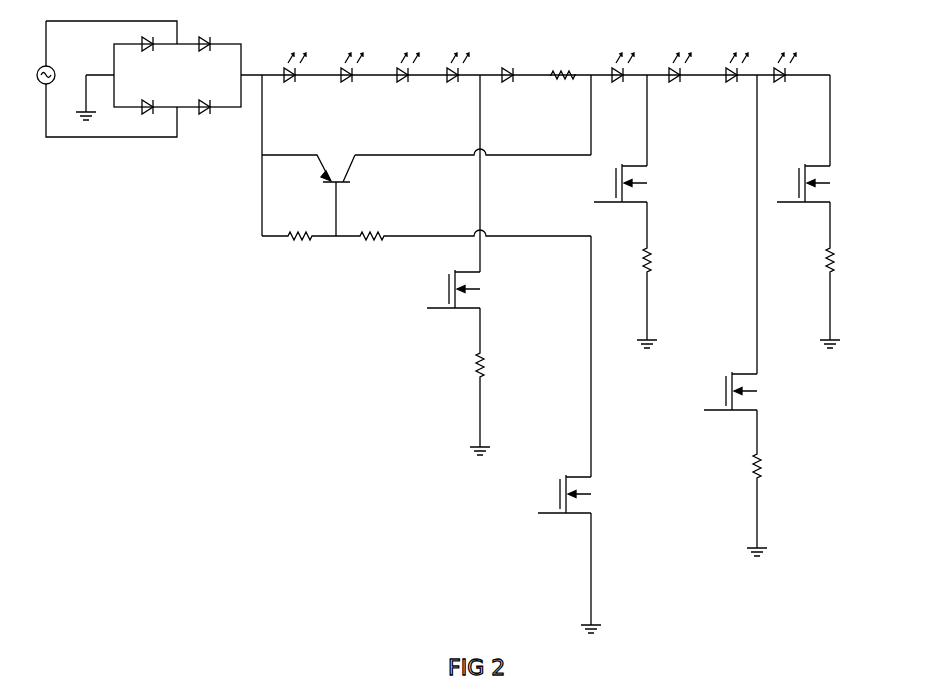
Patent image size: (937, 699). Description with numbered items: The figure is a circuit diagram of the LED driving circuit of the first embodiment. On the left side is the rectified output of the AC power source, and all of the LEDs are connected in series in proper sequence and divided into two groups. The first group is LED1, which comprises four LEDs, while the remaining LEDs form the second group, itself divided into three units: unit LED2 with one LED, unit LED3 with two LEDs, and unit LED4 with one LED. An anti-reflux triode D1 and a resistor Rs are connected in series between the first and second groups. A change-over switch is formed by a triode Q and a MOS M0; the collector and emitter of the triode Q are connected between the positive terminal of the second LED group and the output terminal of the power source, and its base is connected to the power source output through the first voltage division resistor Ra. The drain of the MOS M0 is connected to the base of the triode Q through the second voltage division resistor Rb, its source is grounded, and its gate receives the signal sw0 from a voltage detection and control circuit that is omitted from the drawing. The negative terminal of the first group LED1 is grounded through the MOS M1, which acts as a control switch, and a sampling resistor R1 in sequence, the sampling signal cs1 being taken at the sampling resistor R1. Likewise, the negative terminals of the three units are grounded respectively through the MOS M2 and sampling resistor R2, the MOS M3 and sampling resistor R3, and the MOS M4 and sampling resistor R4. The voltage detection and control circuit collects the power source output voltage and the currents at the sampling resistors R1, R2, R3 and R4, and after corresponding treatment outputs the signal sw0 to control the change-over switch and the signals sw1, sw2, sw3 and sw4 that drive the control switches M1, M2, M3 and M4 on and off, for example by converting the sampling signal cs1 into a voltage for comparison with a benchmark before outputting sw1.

The first group of LEDs LED1 is at (376, 47).
The LED unit of second group LED2 is at (623, 47).
The LED unit of second group LED3 is at (708, 47).
The LED unit of second group LED4 is at (795, 47).
The anti-reflux triode D1 is at (517, 64).
The resistor Rs is at (563, 61).
The triode Q is at (308, 179).
The first voltage division resistor Ra is at (300, 248).
The second voltage division resistor Rb is at (373, 248).
The MOS M1 is at (476, 289).
The signal sw1 is at (424, 289).
The sampling signal cs1 is at (504, 377).
The sampling resistor R1 is at (500, 366).
The MOS M0 is at (587, 494).
The signal sw0 is at (534, 494).
The MOS M2 is at (642, 183).
The signal sw2 is at (592, 183).
The sampling resistor R2 is at (668, 259).
The MOS M3 is at (751, 391).
The signal sw3 is at (702, 391).
The sampling resistor R3 is at (774, 466).
The MOS M4 is at (824, 183).
The signal sw4 is at (778, 183).
The sampling resistor R4 is at (849, 259).